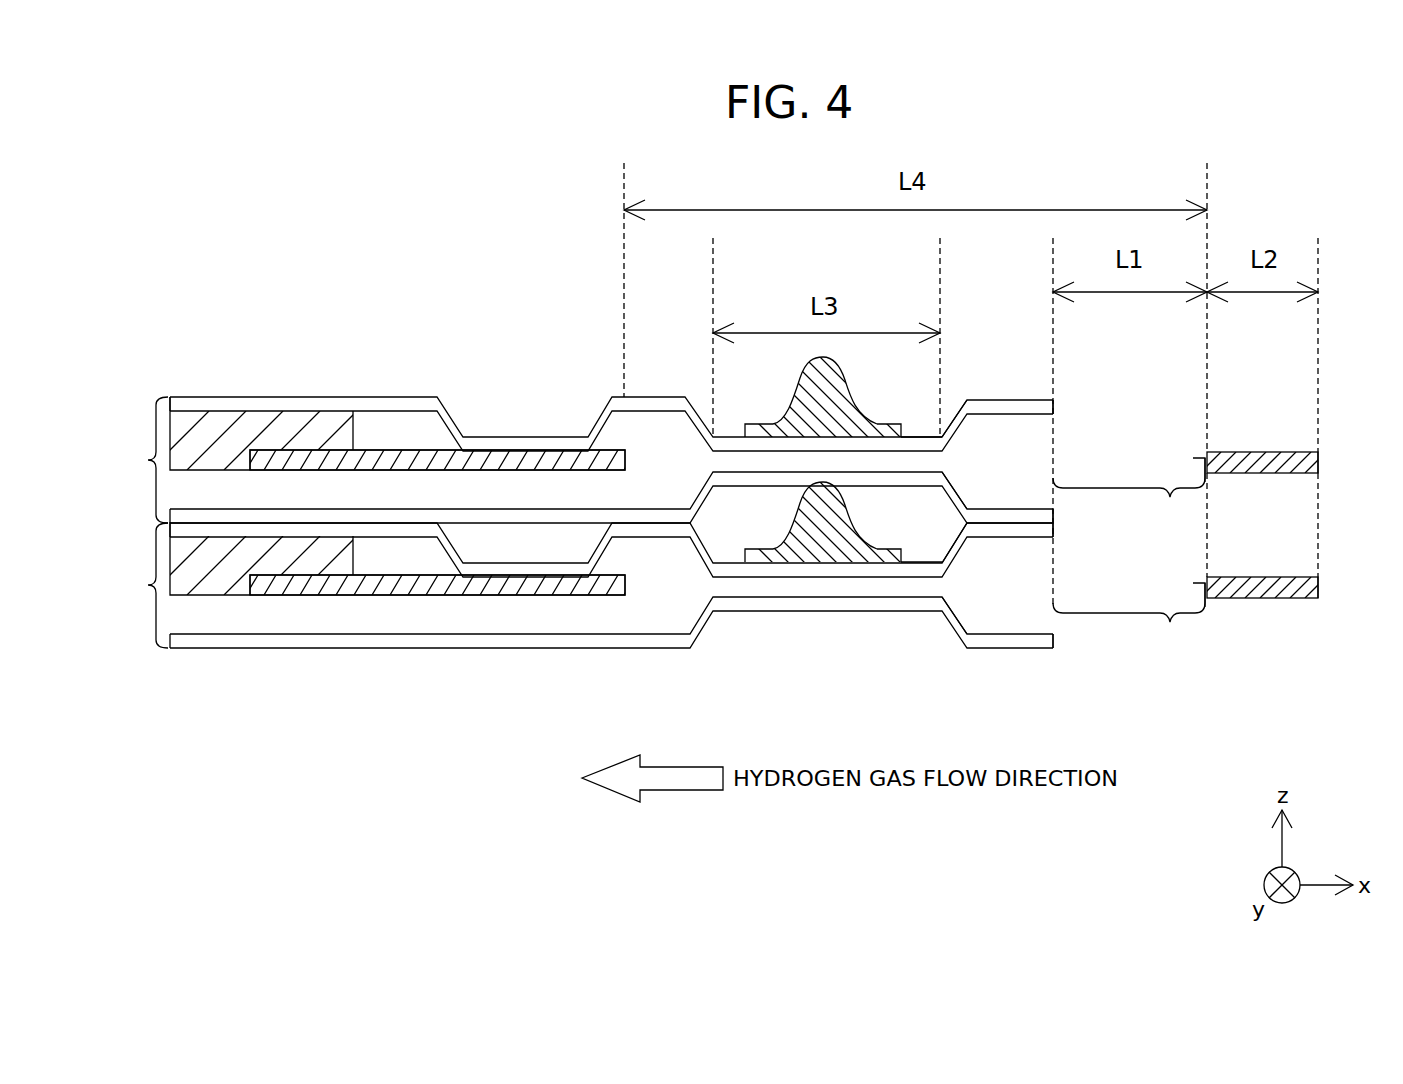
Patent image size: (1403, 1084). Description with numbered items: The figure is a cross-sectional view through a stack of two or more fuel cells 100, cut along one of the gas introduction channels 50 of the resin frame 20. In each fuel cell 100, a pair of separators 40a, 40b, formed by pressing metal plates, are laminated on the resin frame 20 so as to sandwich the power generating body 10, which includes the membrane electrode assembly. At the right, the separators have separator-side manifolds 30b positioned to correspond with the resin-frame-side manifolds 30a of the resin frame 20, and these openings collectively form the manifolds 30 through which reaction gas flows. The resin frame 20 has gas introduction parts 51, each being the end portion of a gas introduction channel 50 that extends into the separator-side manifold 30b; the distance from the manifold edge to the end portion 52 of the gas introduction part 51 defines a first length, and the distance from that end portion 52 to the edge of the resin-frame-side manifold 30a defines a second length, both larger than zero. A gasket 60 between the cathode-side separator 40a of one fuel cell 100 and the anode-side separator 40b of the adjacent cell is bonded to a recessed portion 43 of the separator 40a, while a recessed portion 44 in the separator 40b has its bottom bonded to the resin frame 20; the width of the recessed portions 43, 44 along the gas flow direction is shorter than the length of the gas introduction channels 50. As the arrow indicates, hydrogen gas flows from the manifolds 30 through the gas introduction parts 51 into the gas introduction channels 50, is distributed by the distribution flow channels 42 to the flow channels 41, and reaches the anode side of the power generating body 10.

The fuel cell 100 is at (136, 522).
The power generating body 10 is at (213, 418).
The flow channels 41 is at (300, 478).
The distribution flow channels 42 is at (652, 445).
The recessed portion 44 is at (770, 487).
The gas introduction channels 50 is at (728, 465).
The gasket 60 is at (847, 393).
The recessed portion 43 is at (922, 434).
The separator 40a is at (967, 398).
The separator 40b is at (975, 508).
The separator-side manifolds 30b is at (1055, 402).
The resin-frame-side manifolds 30a is at (1320, 458).
The gas introduction parts 51 is at (1129, 559).
The end portion 52 is at (1197, 457).
The resin frame 20 is at (1238, 452).
The manifolds 30 is at (1318, 703).